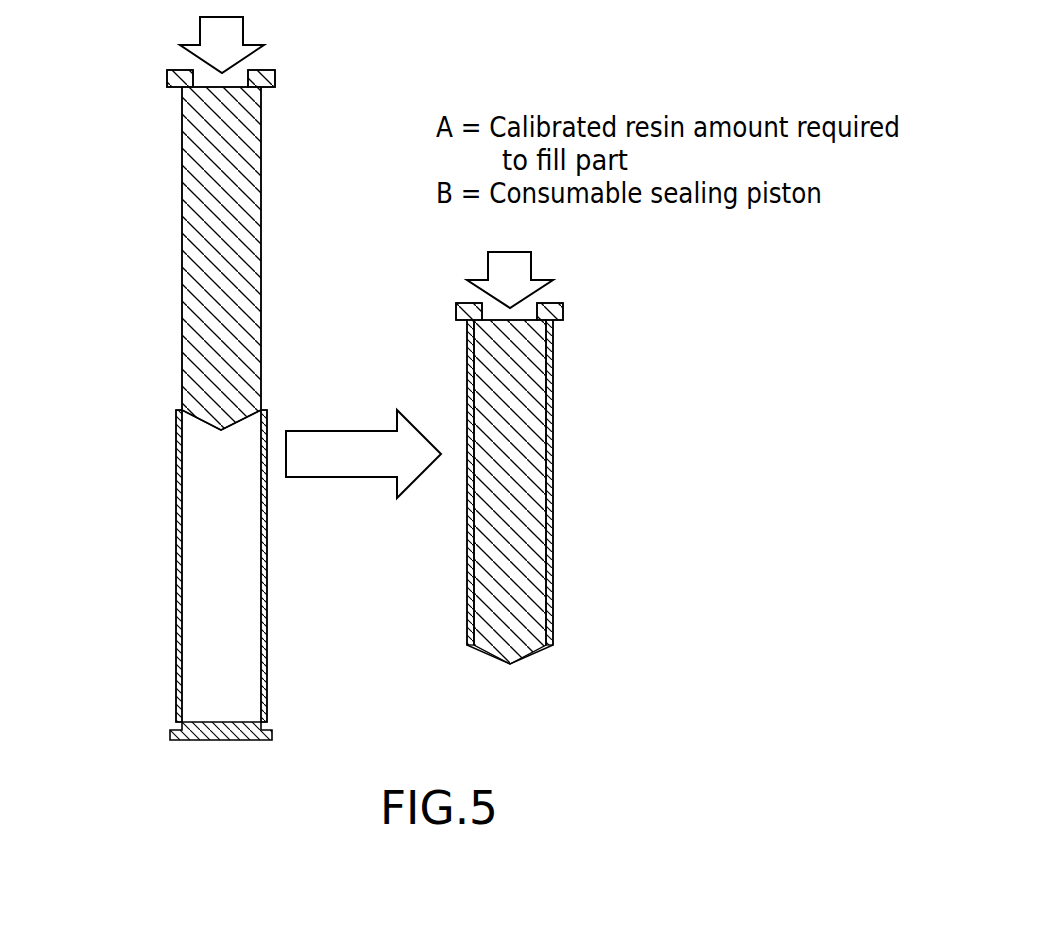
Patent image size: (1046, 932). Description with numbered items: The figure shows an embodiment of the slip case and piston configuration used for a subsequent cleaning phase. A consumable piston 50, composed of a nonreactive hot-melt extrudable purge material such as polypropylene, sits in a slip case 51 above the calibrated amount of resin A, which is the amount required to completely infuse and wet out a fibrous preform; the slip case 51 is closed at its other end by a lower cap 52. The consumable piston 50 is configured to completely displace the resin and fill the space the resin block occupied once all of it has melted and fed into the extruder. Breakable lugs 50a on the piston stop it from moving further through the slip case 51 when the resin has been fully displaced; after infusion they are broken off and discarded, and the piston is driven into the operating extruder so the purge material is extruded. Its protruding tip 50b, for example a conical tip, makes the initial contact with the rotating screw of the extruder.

The consumable piston 50 is at (217, 262).
The breakable lugs 50a is at (167, 77).
The protruding tip 50b is at (510, 664).
The slip case 51 is at (177, 570).
The lower cap 52 is at (194, 742).